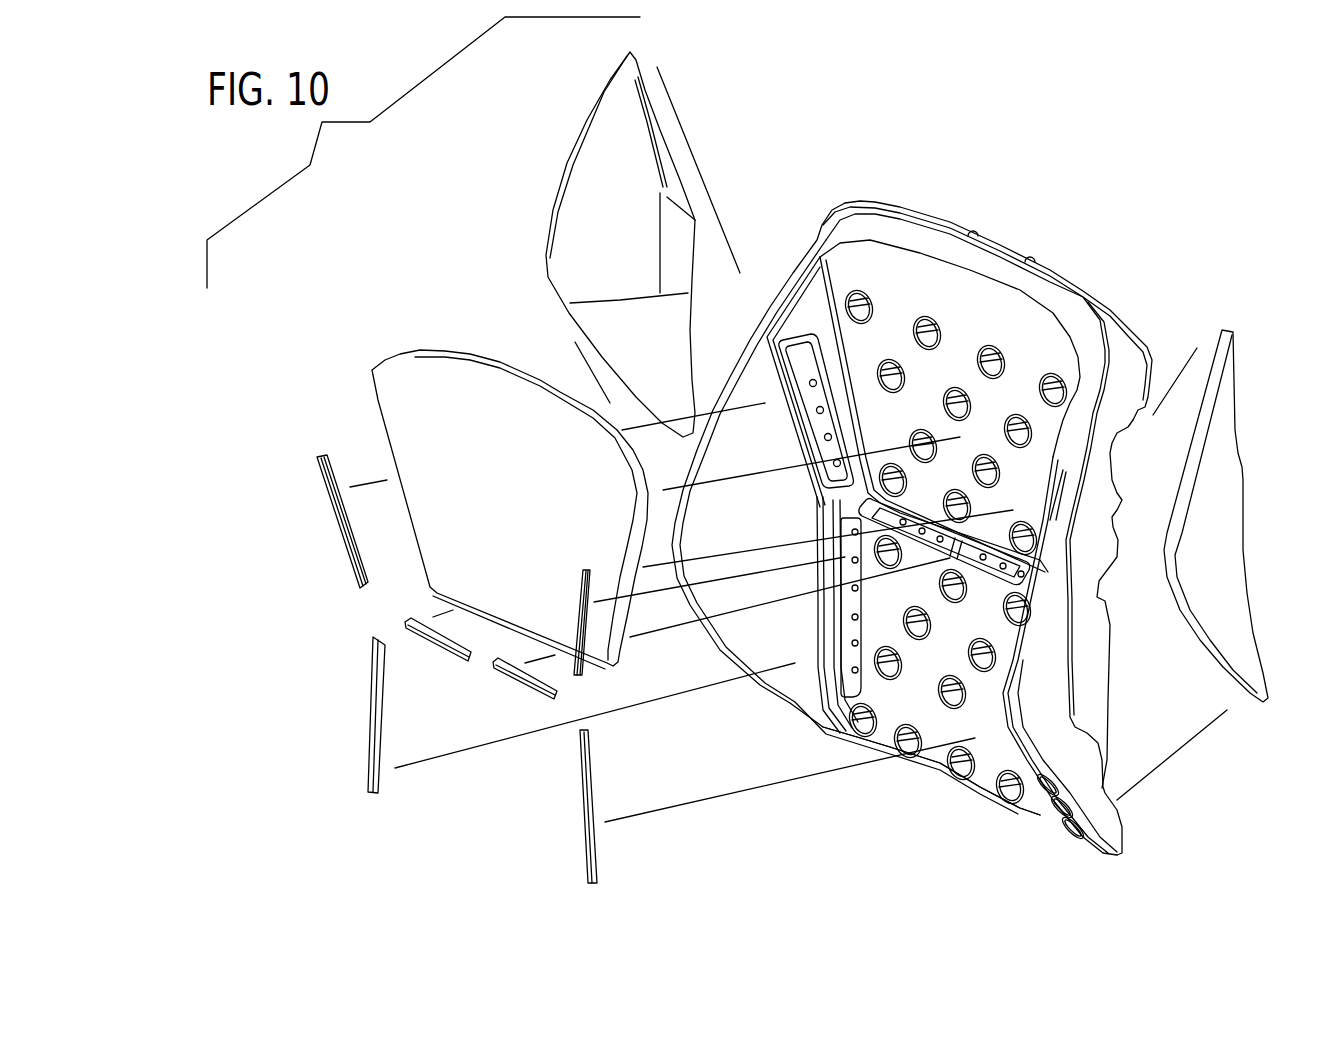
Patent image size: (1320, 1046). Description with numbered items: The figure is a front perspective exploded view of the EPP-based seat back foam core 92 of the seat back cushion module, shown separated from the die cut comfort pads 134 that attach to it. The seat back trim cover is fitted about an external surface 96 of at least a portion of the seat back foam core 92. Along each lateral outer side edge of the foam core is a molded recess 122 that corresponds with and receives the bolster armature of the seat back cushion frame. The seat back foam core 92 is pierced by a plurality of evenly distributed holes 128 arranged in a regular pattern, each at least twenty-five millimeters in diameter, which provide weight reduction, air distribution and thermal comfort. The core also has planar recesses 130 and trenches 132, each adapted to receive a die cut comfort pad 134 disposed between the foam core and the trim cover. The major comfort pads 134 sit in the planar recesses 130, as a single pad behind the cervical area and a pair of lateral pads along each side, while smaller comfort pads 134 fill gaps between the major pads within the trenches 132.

The seat back foam core 92 is at (1097, 307).
The external surface 96 is at (1010, 690).
The recess 122 is at (1083, 662).
The evenly distributed holes 128 is at (943, 775).
The planar recesses 130 is at (913, 285).
The trenches 132 is at (808, 365).
The die cut comfort pad 134 is at (578, 212).